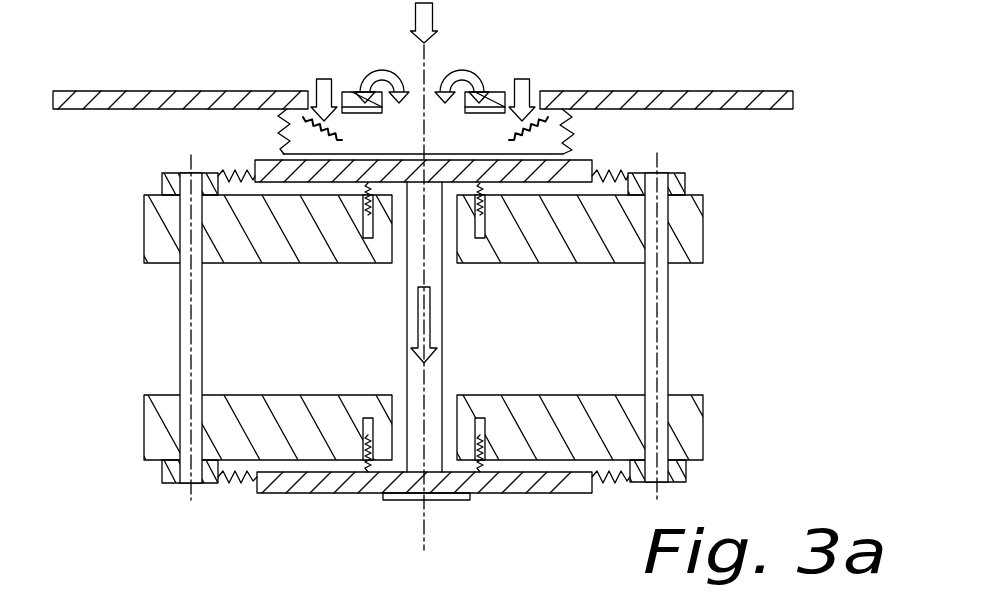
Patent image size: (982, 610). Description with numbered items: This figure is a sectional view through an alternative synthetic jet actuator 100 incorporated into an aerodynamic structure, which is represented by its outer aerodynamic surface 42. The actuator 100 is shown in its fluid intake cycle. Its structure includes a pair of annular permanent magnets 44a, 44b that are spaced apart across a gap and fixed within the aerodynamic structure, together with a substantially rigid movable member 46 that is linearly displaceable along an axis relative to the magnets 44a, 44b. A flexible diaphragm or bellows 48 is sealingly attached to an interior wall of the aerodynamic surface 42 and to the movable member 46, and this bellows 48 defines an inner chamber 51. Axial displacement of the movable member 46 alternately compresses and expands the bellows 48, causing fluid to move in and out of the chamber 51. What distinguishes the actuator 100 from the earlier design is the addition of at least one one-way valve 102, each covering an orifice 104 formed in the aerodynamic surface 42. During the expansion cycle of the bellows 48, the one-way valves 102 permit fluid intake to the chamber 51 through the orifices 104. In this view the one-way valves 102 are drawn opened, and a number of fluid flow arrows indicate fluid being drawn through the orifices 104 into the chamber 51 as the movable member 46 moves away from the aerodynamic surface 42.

The outer aerodynamic surface 42 is at (678, 91).
The annular permanent magnet 44a is at (143, 236).
The annular permanent magnet 44b is at (143, 430).
The movable member 46 is at (313, 498).
The bellows 48 is at (556, 140).
The inner chamber 51 is at (456, 144).
The jet actuator 100 is at (726, 190).
The one-way valve 102 is at (310, 130).
The orifice 104 is at (308, 98).